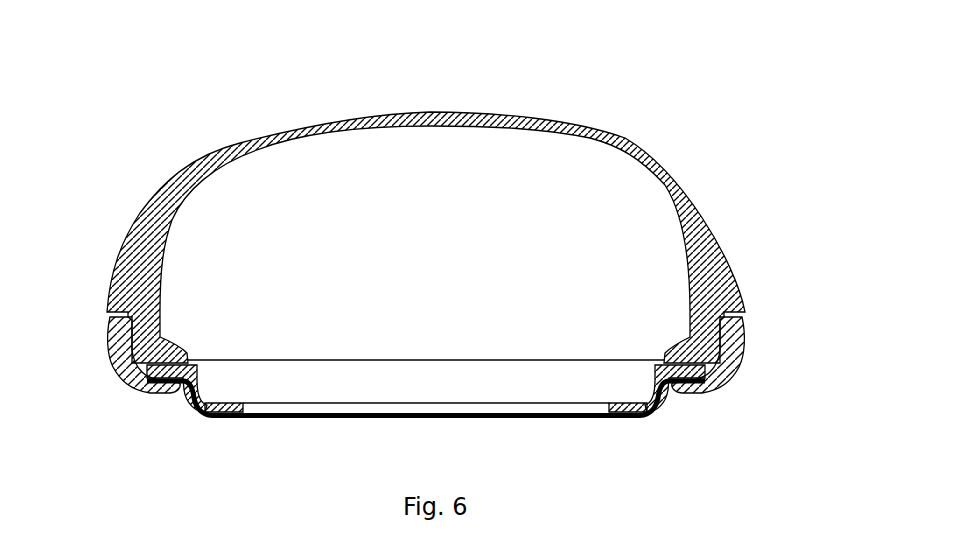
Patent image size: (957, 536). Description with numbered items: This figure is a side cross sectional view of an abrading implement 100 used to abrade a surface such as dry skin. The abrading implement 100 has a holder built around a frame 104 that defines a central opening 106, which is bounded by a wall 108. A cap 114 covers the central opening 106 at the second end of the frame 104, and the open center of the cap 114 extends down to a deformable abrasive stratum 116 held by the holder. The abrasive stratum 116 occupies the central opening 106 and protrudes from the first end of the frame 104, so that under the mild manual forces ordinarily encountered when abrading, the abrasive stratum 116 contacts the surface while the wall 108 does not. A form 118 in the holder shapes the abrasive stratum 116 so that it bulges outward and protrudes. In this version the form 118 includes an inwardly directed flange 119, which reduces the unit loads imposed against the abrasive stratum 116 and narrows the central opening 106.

The abrading implement 100 is at (444, 263).
The frame 104 is at (745, 358).
The central opening 106 is at (258, 413).
The wall 108 is at (117, 370).
The cap 114 is at (634, 138).
The abrasive stratum 116 is at (443, 415).
The form 118 is at (203, 392).
The inwardly directed flange 119 is at (628, 399).